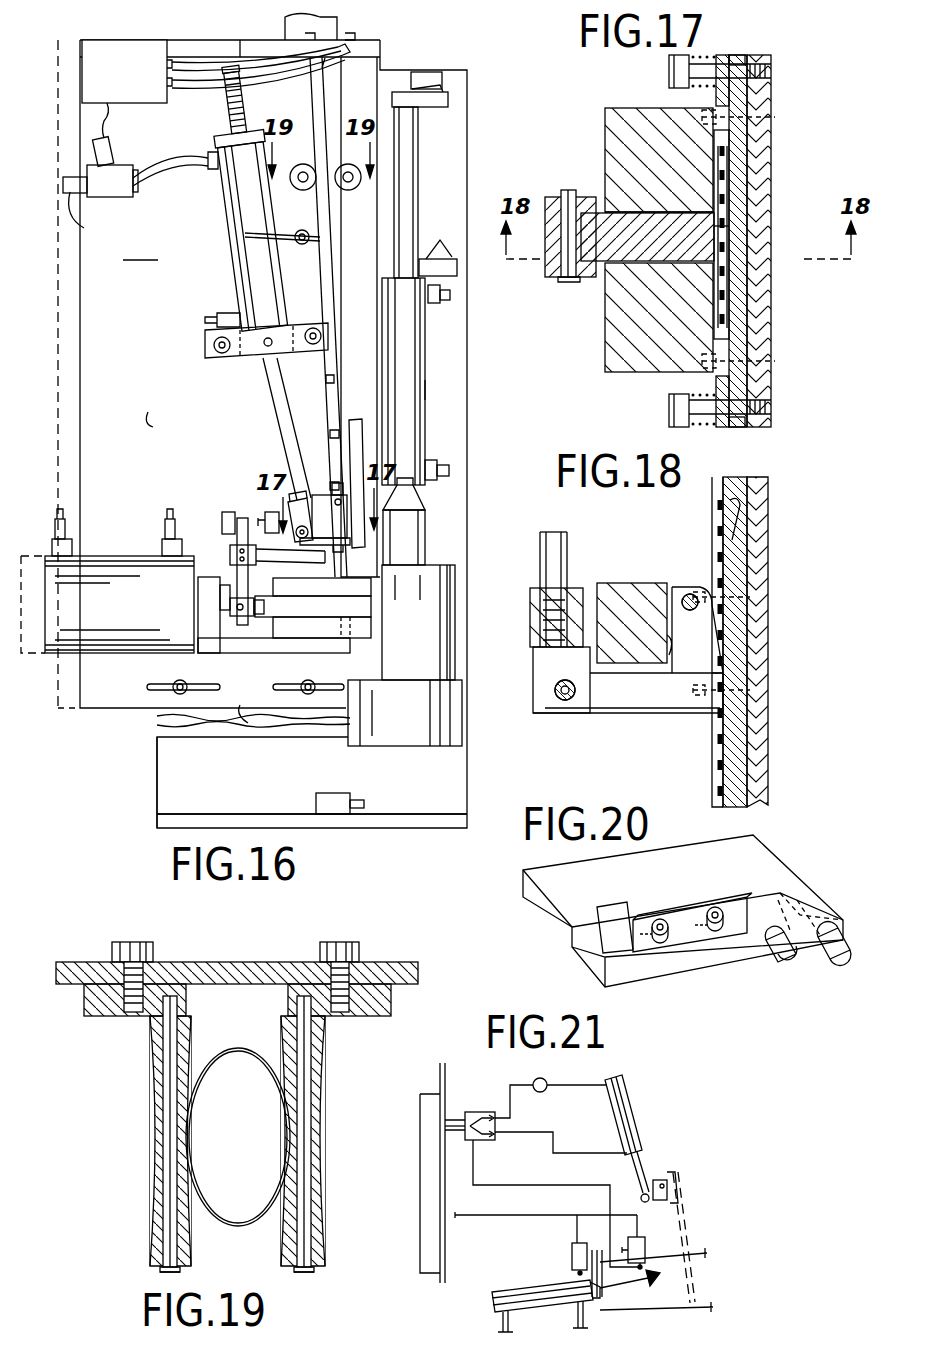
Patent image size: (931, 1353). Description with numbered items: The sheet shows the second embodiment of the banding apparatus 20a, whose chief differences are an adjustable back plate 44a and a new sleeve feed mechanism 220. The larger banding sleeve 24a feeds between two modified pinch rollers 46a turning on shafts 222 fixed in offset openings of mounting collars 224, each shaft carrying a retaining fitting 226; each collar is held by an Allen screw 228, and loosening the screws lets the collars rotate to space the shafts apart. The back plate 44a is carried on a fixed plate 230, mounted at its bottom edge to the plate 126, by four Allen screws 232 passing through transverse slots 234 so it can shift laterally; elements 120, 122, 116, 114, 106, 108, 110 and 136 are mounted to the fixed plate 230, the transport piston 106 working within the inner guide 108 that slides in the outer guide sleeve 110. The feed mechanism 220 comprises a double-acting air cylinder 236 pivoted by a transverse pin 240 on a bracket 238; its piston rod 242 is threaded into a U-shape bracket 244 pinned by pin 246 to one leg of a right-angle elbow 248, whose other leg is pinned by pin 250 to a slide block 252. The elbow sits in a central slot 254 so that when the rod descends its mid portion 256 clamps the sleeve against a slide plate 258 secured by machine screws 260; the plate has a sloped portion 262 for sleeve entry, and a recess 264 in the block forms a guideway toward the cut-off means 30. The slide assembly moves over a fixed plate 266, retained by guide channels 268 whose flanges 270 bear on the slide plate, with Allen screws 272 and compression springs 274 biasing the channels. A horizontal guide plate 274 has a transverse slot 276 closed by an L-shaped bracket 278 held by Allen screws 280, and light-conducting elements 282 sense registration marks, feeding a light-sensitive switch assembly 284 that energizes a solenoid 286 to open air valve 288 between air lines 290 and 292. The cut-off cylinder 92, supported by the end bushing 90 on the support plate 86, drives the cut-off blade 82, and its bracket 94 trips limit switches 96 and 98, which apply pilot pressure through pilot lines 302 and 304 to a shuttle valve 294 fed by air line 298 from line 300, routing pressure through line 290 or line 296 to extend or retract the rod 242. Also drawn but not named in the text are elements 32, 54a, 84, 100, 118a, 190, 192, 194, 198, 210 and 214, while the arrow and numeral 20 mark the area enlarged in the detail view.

In FIG. 16, the banding apparatus 20 is at (380, 39).
In FIG. 16, the banding apparatus (second embodiment) 20a is at (140, 250).
In FIG. 16, the banding sleeve 24a is at (333, 262).
In FIG. 17, the banding sleeve 24a is at (730, 180).
In FIG. 18, the banding sleeve 24a is at (718, 782).
In FIG. 21, the banding sleeve 24a is at (684, 1237).
In FIG. 19, the banding sleeve 24a is at (222, 1058).
In FIG. 16, the cut-off mechanism 30 is at (107, 601).
In FIG. 16, the piston cylinder 32 is at (430, 392).
In FIG. 16, the back plate 44a is at (90, 352).
In FIG. 19, the back plate 44a is at (244, 962).
In FIG. 19, the pinch rollers 46a is at (150, 1062).
In FIG. 19, the tube wall 54a is at (157, 1135).
In FIG. 21, the cut-off blade 82 is at (648, 1284).
In FIG. 16, the carriage 84 is at (348, 614).
In FIG. 16, the support plate 86 is at (243, 655).
In FIG. 16, the end bushing 90 is at (204, 653).
In FIG. 16, the double-acting air cylinder 92 is at (110, 653).
In FIG. 21, the double-acting air cylinder 92 is at (492, 1299).
In FIG. 16, the bracket 94 is at (242, 518).
In FIG. 21, the bracket 94 is at (597, 1297).
In FIG. 16, the limit switch 96 is at (224, 514).
In FIG. 21, the limit switch 96 is at (572, 1250).
In FIG. 16, the limit switch 98 is at (265, 512).
In FIG. 21, the limit switch 98 is at (640, 1237).
In FIG. 16, the rod 100 is at (322, 553).
In FIG. 16, the transport piston 106 is at (421, 528).
In FIG. 16, the inner guide 108 is at (445, 621).
In FIG. 16, the outer guide sleeve 110 is at (391, 746).
In FIG. 16, the mounted element 114 is at (425, 426).
In FIG. 16, the mounted element 116 is at (412, 158).
In FIG. 16, the bracket 118a is at (448, 100).
In FIG. 16, the mounted element 120 is at (428, 72).
In FIG. 16, the mounted element 122 is at (448, 270).
In FIG. 16, the plate 126 is at (455, 818).
In FIG. 16, the mounted element 136 is at (336, 793).
In FIG. 21, the wire 190 is at (508, 1215).
In FIG. 21, the wire 192 is at (590, 1215).
In FIG. 16, the terminal 194 is at (64, 519).
In FIG. 21, the terminal 194 is at (497, 1320).
In FIG. 16, the fitting 198 is at (450, 471).
In FIG. 16, the fitting 210 is at (443, 303).
In FIG. 16, the terminal 214 is at (170, 519).
In FIG. 21, the terminal 214 is at (575, 1312).
In FIG. 16, the feed mechanism 220 is at (232, 199).
In FIG. 17, the feed mechanism 220 is at (606, 373).
In FIG. 19, the shafts 222 is at (165, 1222).
In FIG. 16, the mounting collars 224 is at (300, 191).
In FIG. 19, the mounting collars 224 is at (84, 1005).
In FIG. 16, the retaining fitting 226 is at (345, 170).
In FIG. 19, the retaining fitting 226 is at (294, 1270).
In FIG. 19, the Allen screw 228 is at (126, 942).
In FIG. 16, the fixed plate 230 is at (455, 778).
In FIG. 16, the Allen screws 232 is at (302, 244).
In FIG. 16, the transverse slots 234 is at (245, 235).
In FIG. 16, the double-acting air cylinder 236 is at (242, 282).
In FIG. 21, the double-acting air cylinder 236 is at (616, 1077).
In FIG. 16, the bracket 238 is at (205, 352).
In FIG. 16, the transverse pin 240 is at (266, 348).
In FIG. 16, the piston rod 242 is at (274, 396).
In FIG. 18, the piston rod 242 is at (560, 540).
In FIG. 21, the piston rod 242 is at (645, 1160).
In FIG. 16, the U-shape bracket 244 is at (308, 492).
In FIG. 17, the U-shape bracket 244 is at (548, 200).
In FIG. 18, the U-shape bracket 244 is at (533, 685).
In FIG. 17, the pin 246 is at (571, 190).
In FIG. 18, the pin 246 is at (563, 702).
In FIG. 17, the elbow 248 is at (603, 245).
In FIG. 18, the elbow 248 is at (615, 713).
In FIG. 18, the pin 250 is at (688, 594).
In FIG. 16, the slide block 252 is at (332, 505).
In FIG. 17, the slide block 252 is at (605, 350).
In FIG. 18, the slide block 252 is at (612, 583).
In FIG. 21, the slide block 252 is at (680, 1184).
In FIG. 17, the central slot 254 is at (612, 215).
In FIG. 18, the central slot 254 is at (672, 660).
In FIG. 17, the elbow mid portion 256 is at (725, 228).
In FIG. 18, the elbow mid portion 256 is at (725, 676).
In FIG. 17, the slide plate 258 is at (754, 318).
In FIG. 18, the slide plate 258 is at (750, 568).
In FIG. 17, the machine screws 260 is at (776, 99).
In FIG. 18, the machine screws 260 is at (752, 612).
In FIG. 18, the sloped portion 262 is at (742, 500).
In FIG. 17, the recess 264 is at (730, 140).
In FIG. 17, the fixed plate 266 is at (752, 250).
In FIG. 18, the fixed plate 266 is at (752, 765).
In FIG. 17, the guide channels 268 is at (740, 55).
In FIG. 17, the overlying flange 270 is at (716, 100).
In FIG. 18, the overlying flange 270 is at (712, 492).
In FIG. 17, the Allen screws 272 is at (669, 68).
In FIG. 16, the horizontal guide plate 274 is at (255, 40).
In FIG. 17, the horizontal guide plate 274 is at (706, 55).
In FIG. 20, the horizontal guide plate 274 is at (772, 862).
In FIG. 20, the transverse slot 276 is at (690, 910).
In FIG. 20, the L-shaped bracket 278 is at (612, 905).
In FIG. 16, the Allen screws 280 is at (345, 36).
In FIG. 20, the Allen screws 280 is at (713, 924).
In FIG. 16, the light-conducting elements 282 is at (323, 62).
In FIG. 20, the light-conducting elements 282 is at (845, 960).
In FIG. 16, the light-sensitive switch assembly 284 is at (142, 40).
In FIG. 16, the solenoid 286 is at (112, 150).
In FIG. 16, the air valve 288 is at (114, 197).
In FIG. 21, the air valve 288 is at (548, 1080).
In FIG. 16, the air line 290 is at (94, 217).
In FIG. 21, the air line 290 is at (505, 1090).
In FIG. 16, the air line 292 is at (190, 170).
In FIG. 21, the air line 292 is at (577, 1086).
In FIG. 21, the shuttle valve 294 is at (480, 1140).
In FIG. 21, the air line 296 is at (575, 1153).
In FIG. 21, the air line 298 is at (468, 1115).
In FIG. 21, the air line 300 is at (428, 1165).
In FIG. 21, the pilot line 302 is at (438, 1102).
In FIG. 21, the pilot line 304 is at (505, 1185).